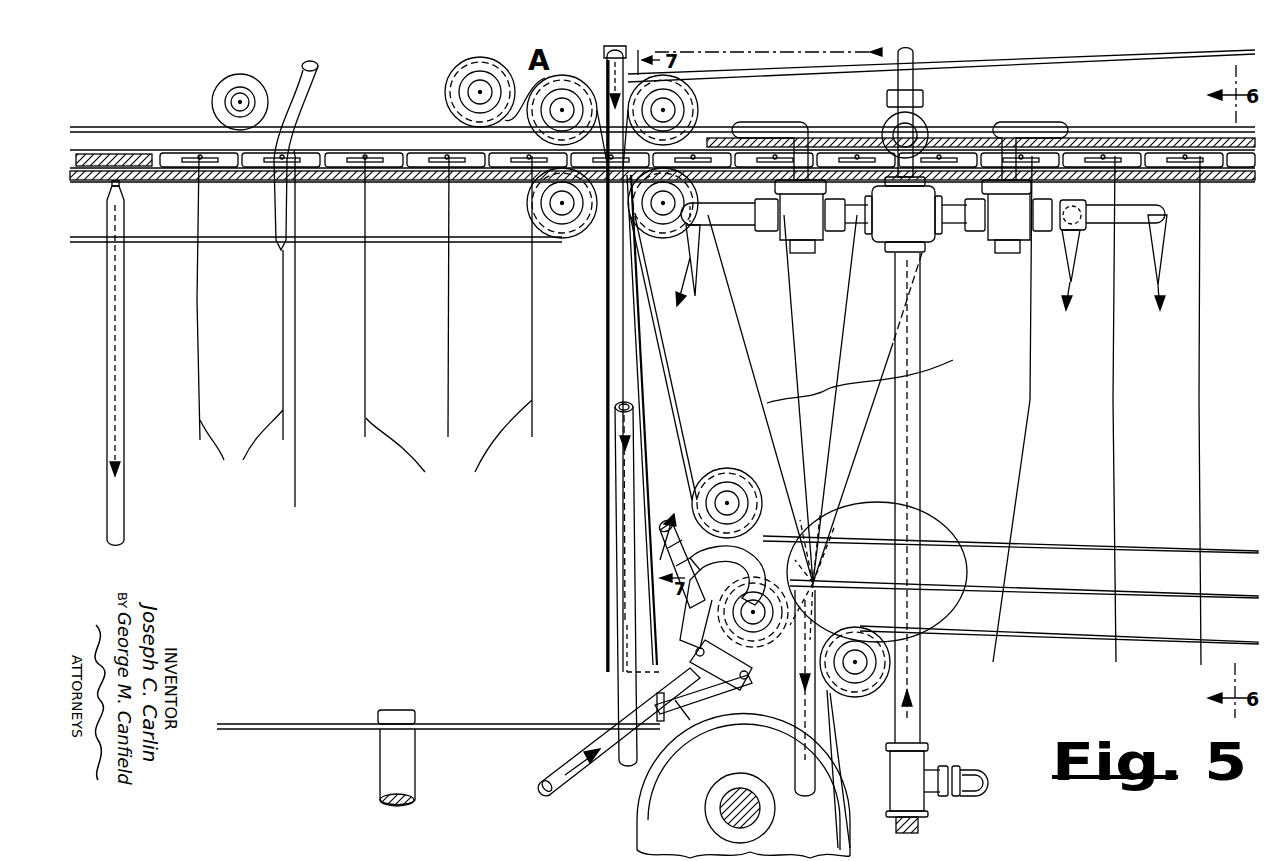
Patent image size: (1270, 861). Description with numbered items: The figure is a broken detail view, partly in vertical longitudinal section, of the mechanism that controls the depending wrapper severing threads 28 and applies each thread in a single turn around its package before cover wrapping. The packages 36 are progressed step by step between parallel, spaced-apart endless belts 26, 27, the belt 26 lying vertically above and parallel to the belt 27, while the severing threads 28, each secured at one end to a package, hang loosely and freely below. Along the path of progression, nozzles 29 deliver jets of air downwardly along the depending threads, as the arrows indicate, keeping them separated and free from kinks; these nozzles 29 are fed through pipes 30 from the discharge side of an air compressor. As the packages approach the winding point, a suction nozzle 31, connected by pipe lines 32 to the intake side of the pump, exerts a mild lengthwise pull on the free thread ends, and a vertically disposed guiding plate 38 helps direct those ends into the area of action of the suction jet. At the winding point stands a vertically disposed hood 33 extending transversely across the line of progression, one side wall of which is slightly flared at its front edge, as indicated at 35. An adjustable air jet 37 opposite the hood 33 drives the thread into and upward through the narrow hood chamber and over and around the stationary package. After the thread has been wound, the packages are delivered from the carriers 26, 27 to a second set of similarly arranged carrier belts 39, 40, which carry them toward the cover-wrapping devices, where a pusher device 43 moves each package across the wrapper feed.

The endless belt 26 is at (1148, 138).
The endless belt 27 is at (1210, 182).
The severing threads 28 is at (957, 357).
The nozzles 29 is at (272, 210).
The pipes 30 is at (920, 406).
The suction nozzle 31 is at (124, 218).
The pipe lines 32 is at (795, 752).
The hood 33 is at (608, 70).
The flared side wall portion 35 is at (630, 328).
The packages 36 is at (396, 152).
The air jet 37 is at (660, 537).
The guiding plate 38 is at (935, 522).
The carrier belt 39 is at (338, 132).
The carrier belt 40 is at (424, 178).
The pusher device 43 is at (113, 154).